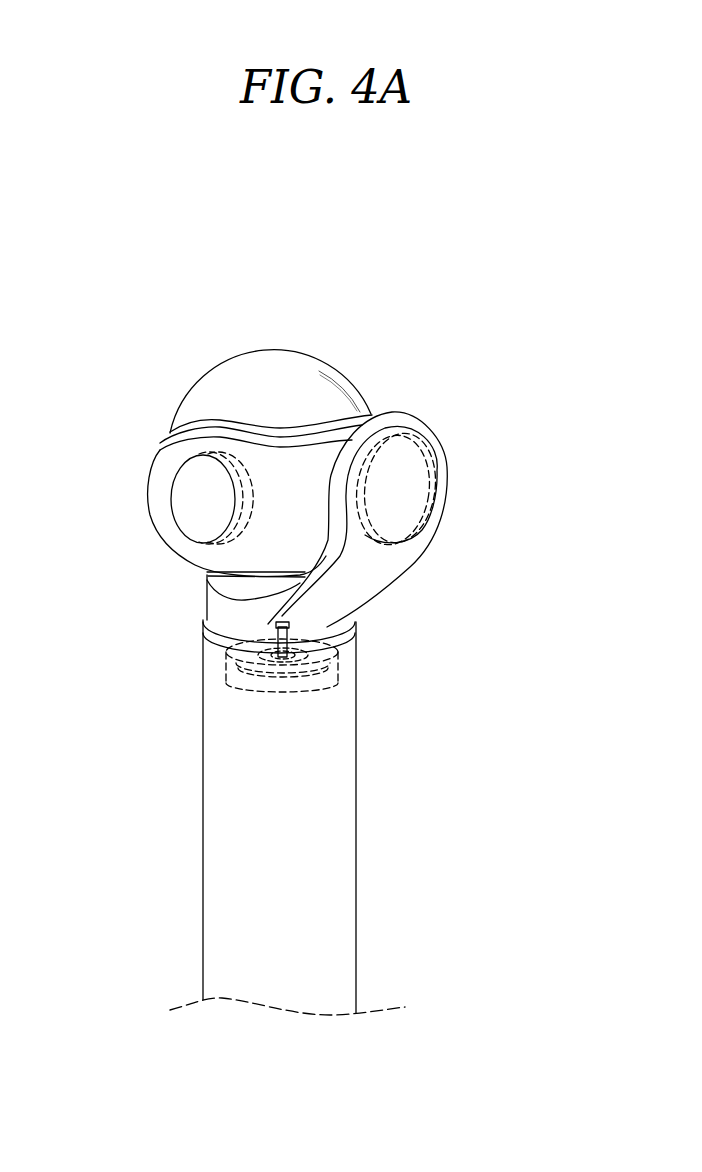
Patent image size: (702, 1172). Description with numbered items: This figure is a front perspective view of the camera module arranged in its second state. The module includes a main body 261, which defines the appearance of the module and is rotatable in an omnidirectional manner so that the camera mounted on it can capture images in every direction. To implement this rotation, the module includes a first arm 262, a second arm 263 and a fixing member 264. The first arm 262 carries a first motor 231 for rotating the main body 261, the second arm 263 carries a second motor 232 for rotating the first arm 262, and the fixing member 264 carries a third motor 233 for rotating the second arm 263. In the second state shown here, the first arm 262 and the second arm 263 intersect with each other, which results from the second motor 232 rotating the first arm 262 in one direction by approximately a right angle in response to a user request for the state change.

The main body 261 is at (230, 372).
The first arm 262 is at (160, 462).
The first motor 231 is at (172, 498).
The second arm 263 is at (443, 462).
The second motor 232 is at (432, 498).
The third motor 233 is at (226, 671).
The fixing member 264 is at (223, 754).